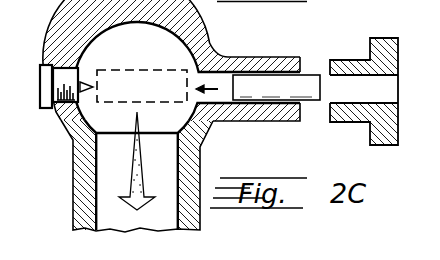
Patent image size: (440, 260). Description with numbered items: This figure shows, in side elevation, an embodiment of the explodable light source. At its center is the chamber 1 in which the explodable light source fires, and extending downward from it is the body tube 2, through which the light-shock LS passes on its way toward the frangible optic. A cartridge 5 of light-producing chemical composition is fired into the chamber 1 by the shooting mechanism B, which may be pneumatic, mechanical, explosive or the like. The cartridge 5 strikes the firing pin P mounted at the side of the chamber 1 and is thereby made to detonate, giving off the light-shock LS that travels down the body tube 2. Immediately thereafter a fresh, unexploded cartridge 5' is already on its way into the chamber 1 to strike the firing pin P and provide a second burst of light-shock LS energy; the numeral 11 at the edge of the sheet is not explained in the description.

The chamber 1 is at (102, 12).
The body tube 2 is at (77, 167).
The firing pin P is at (67, 78).
The cartridge 5 is at (142, 76).
The fresh unexploded cartridge 5' is at (276, 72).
The shooting mechanism B is at (390, 47).
The light-shock LS is at (141, 180).
The element 11 is at (433, 150).